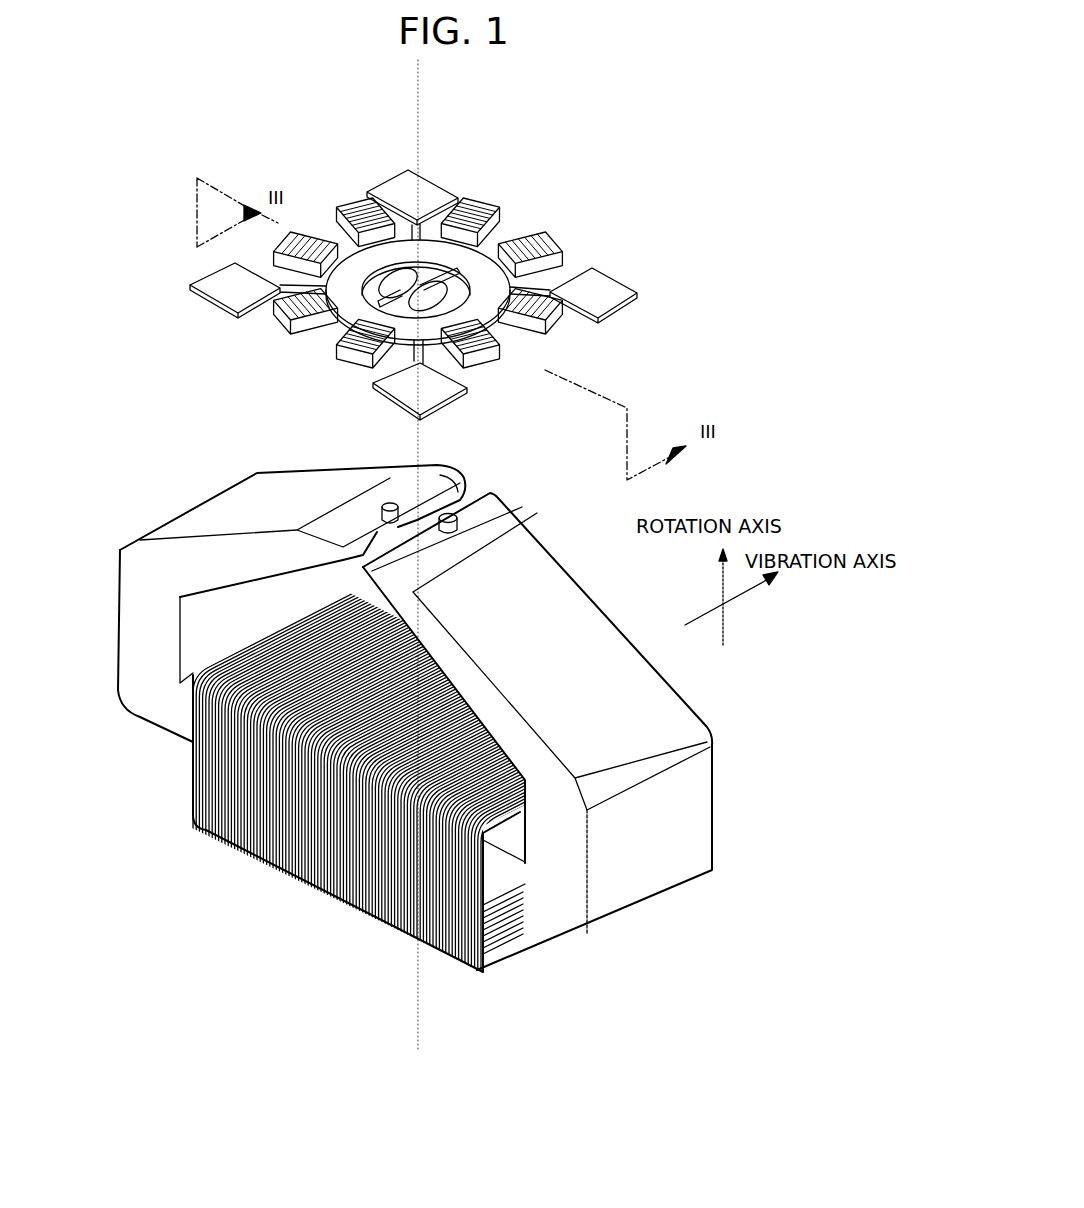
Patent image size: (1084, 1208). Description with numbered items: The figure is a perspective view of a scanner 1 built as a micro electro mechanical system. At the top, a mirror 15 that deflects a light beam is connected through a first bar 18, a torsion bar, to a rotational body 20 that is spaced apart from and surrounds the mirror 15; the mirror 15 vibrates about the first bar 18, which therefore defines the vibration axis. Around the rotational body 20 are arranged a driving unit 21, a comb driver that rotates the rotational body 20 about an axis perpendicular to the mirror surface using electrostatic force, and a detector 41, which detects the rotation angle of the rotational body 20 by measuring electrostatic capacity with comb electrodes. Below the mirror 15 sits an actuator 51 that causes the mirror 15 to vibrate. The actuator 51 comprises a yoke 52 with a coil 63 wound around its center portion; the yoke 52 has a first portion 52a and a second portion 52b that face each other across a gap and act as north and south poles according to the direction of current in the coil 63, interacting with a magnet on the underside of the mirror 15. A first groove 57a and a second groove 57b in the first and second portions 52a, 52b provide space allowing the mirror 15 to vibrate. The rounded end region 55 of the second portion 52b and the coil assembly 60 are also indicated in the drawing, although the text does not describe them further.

The scanner 1 is at (78, 237).
The mirror 15 is at (400, 272).
The first bar 18 is at (440, 278).
The rotational body 20 is at (460, 257).
The driving unit 21 is at (308, 212).
The detector 41 is at (531, 219).
The actuator 51 is at (740, 754).
The yoke 52 is at (563, 913).
The first portion 52a is at (470, 552).
The second portion 52b is at (347, 510).
The arm end 55 is at (460, 480).
The first groove 57a is at (457, 520).
The second groove 57b is at (384, 503).
The coil assembly 60 is at (503, 953).
The coil 63 is at (263, 837).